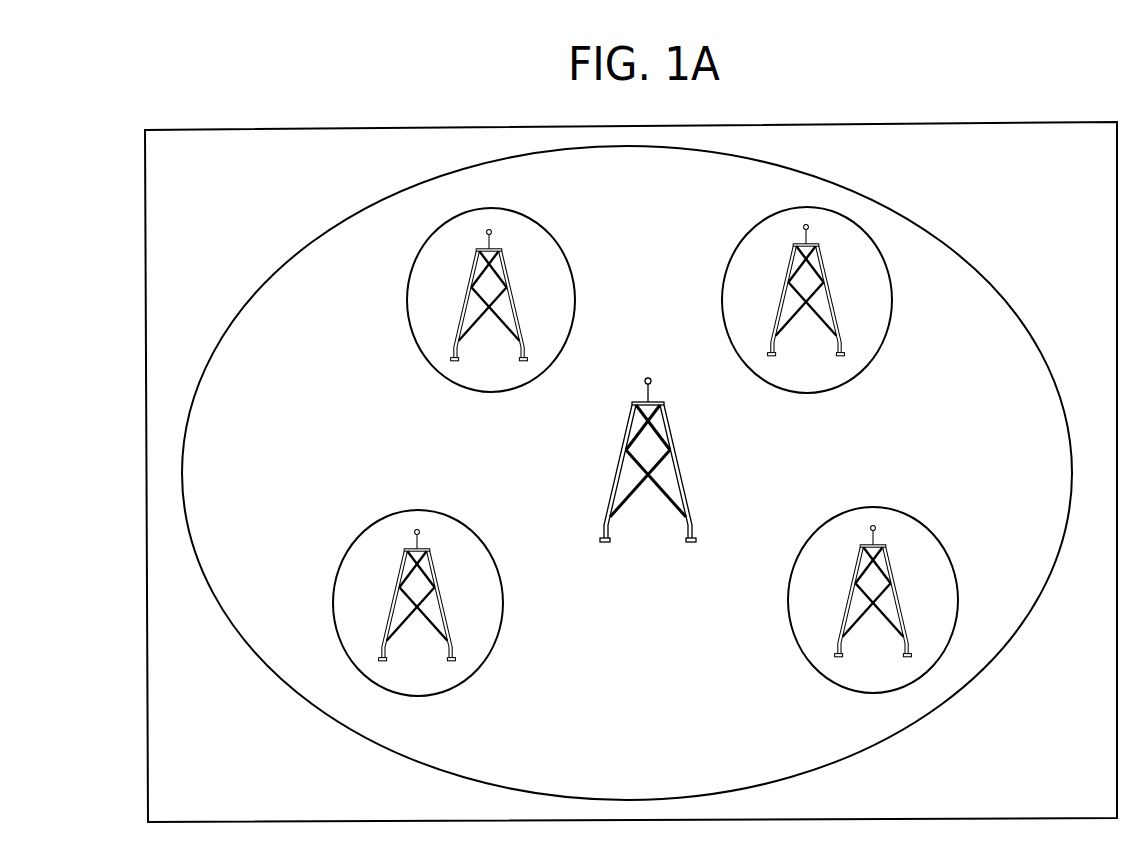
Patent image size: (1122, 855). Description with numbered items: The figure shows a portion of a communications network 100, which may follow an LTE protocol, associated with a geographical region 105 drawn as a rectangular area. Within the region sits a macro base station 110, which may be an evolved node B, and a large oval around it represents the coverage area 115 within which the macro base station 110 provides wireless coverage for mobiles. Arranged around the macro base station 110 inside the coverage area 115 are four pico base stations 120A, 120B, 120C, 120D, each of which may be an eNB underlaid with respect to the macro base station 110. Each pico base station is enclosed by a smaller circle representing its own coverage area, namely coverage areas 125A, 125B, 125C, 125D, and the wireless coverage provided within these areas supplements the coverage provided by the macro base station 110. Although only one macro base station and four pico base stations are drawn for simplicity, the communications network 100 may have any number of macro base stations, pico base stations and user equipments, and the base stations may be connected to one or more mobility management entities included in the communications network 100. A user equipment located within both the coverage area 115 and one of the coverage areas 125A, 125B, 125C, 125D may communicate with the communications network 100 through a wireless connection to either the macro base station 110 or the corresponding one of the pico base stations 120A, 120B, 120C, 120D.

The communications network 100 is at (1000, 108).
The geographical region 105 is at (1076, 180).
The macro base station 110 is at (685, 491).
The coverage area 115 is at (963, 256).
The pico base station 120A is at (828, 380).
The pico base station 120B is at (895, 682).
The pico base station 120C is at (438, 683).
The pico base station 120D is at (513, 383).
The coverage area 125A is at (887, 331).
The coverage area 125B is at (943, 548).
The coverage area 125C is at (488, 554).
The coverage area 125D is at (563, 253).